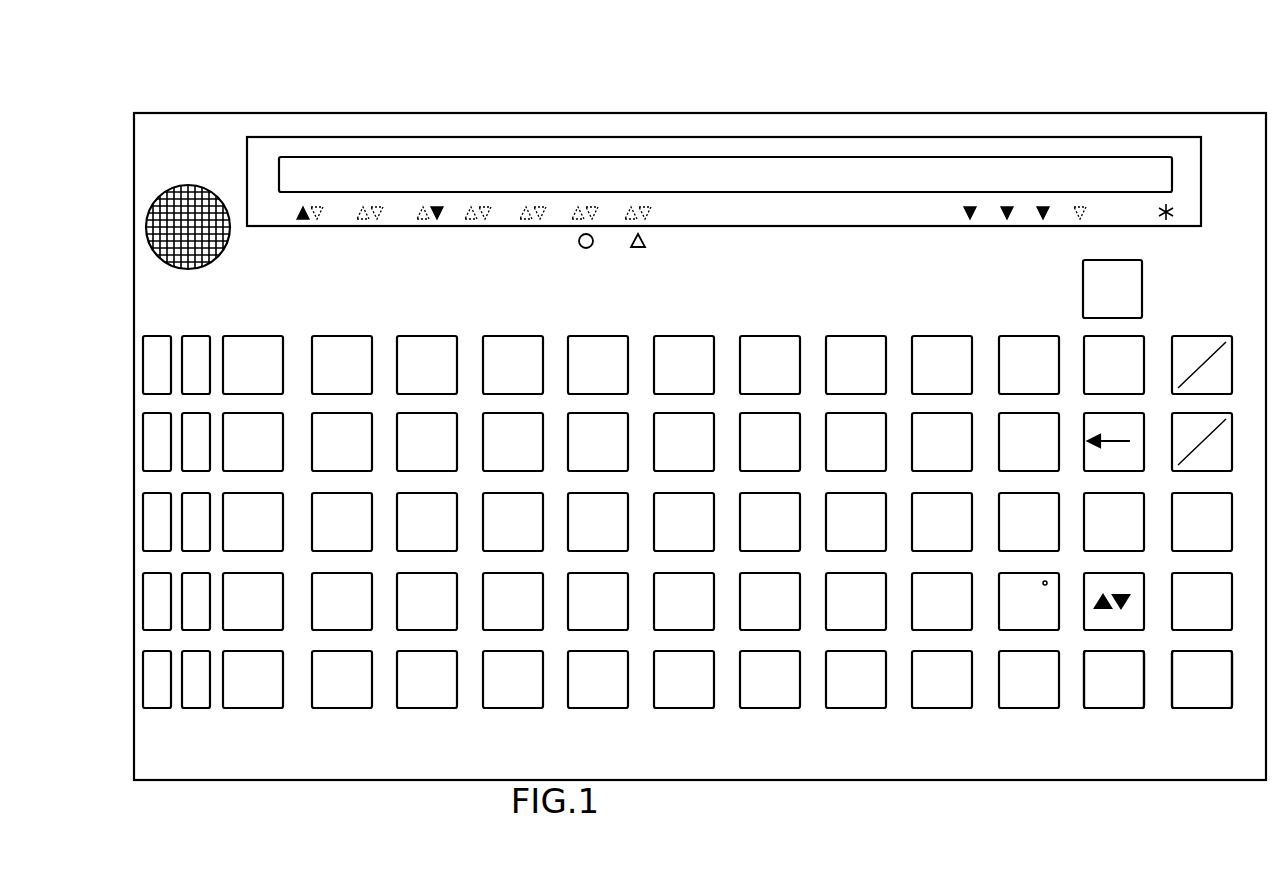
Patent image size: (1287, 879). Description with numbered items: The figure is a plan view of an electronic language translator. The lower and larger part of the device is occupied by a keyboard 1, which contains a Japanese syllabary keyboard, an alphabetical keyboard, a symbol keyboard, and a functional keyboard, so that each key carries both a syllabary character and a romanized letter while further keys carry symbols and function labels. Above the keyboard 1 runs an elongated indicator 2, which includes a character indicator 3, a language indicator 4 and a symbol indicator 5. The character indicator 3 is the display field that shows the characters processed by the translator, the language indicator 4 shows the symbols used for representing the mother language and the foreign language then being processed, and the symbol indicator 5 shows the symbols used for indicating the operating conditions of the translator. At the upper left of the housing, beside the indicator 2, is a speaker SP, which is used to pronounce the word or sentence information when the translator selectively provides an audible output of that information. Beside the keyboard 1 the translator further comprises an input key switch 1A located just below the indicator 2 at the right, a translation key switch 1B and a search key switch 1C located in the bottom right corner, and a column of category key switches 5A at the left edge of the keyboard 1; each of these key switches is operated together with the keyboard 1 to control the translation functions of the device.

The speaker SP is at (173, 185).
The keyboard 1 is at (687, 533).
The input key switch 1A is at (1115, 265).
The translation key switch 1B is at (1110, 705).
The search key switch 1C is at (1198, 705).
The indicator 2 is at (845, 190).
The character indicator 3 is at (789, 166).
The language indicator 4 is at (466, 210).
The symbol indicator 5 is at (1063, 206).
The category key switches 5A is at (183, 706).